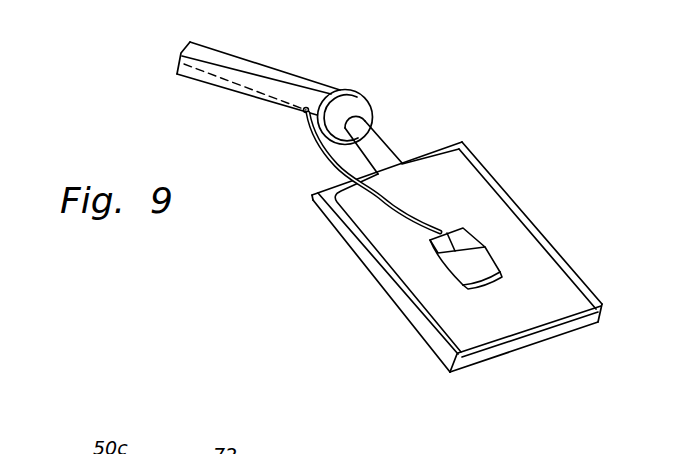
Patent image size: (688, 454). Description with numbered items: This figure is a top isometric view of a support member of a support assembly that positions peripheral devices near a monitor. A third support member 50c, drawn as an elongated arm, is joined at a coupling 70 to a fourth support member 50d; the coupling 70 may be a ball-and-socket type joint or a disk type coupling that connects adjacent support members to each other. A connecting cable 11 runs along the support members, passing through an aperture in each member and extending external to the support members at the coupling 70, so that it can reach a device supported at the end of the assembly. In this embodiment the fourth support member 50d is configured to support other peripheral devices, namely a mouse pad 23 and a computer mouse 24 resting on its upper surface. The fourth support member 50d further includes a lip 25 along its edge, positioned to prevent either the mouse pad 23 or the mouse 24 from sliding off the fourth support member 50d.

The third support member 50c is at (272, 63).
The coupling 70 is at (375, 86).
The fourth support member 50d is at (457, 249).
The connecting cable 11 is at (306, 157).
The mouse pad 23 is at (472, 185).
The computer mouse 24 is at (483, 258).
The lip 25 is at (458, 354).